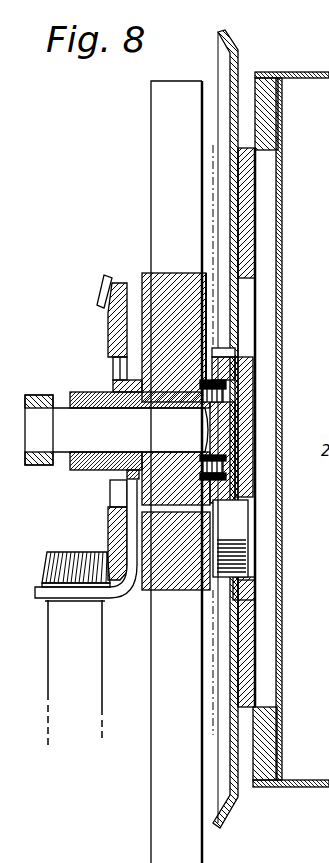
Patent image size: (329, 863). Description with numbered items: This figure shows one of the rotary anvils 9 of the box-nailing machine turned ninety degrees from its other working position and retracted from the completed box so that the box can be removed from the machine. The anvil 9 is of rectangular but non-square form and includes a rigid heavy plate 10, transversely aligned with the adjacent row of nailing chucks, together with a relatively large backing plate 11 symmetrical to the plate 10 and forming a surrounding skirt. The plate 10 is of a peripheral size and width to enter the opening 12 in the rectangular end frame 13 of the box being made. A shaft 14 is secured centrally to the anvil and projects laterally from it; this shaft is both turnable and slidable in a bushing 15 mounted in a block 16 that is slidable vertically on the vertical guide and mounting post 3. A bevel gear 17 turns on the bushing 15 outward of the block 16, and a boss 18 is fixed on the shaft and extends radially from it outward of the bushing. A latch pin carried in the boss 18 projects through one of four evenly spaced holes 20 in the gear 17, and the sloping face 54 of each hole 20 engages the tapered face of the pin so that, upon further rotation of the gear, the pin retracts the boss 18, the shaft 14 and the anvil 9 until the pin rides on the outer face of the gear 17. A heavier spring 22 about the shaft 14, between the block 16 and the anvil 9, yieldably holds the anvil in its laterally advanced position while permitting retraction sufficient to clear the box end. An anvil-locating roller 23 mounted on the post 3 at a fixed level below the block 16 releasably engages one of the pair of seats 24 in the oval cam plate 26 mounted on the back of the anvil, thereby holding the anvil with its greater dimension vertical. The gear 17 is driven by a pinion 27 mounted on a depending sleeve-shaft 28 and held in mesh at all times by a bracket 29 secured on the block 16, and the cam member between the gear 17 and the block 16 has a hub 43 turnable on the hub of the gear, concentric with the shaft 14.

The guide and mounting post 3 is at (157, 160).
The rotary anvil 9 is at (213, 150).
The anvil plate 10 is at (242, 208).
The backing plate 11 is at (236, 125).
The opening 12 is at (276, 200).
The end frame 13 is at (272, 118).
The shaft 14 is at (79, 436).
The bushing 15 is at (96, 458).
The block 16 is at (167, 281).
The bevel gear 17 is at (108, 297).
The boss 18 is at (30, 467).
The hole 20 is at (118, 373).
The spring 22 is at (207, 411).
The anvil-locating roller 23 is at (205, 585).
The seat 24 is at (230, 348).
The cam plate 26 is at (248, 360).
The pinion 27 is at (76, 573).
The sleeve-shaft 28 is at (88, 659).
The bracket 29 is at (121, 593).
The hub 43 is at (124, 481).
The sloping face 54 is at (113, 357).